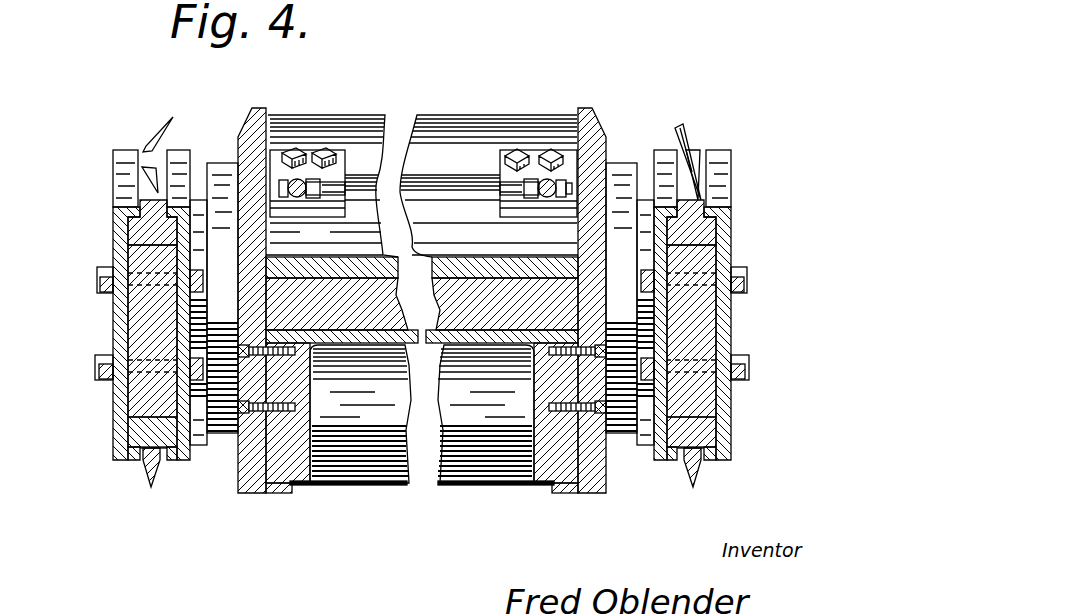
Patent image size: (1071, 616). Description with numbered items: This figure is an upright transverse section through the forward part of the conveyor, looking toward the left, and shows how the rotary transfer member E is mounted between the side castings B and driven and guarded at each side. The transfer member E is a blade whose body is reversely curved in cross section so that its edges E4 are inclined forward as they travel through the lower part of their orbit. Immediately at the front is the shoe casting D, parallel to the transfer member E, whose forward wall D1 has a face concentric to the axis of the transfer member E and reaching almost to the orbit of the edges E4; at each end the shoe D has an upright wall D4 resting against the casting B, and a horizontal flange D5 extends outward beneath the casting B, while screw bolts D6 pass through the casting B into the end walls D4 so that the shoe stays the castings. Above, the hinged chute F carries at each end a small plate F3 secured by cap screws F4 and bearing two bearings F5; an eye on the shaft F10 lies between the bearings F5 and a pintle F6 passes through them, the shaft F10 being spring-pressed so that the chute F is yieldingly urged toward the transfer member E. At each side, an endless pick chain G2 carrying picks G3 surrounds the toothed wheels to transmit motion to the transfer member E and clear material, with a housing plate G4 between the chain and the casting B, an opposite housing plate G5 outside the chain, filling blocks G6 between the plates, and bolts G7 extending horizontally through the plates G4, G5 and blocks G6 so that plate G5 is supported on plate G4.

The side casting B is at (246, 125).
The rotary transfer member E is at (443, 140).
The edges of the transfer member E4 is at (432, 170).
The hinged chute F is at (325, 212).
The plate F3 is at (340, 183).
The cap screws F4 is at (320, 150).
The bearings F5 is at (290, 195).
The pintle F6 is at (362, 178).
The shaft F10 is at (277, 173).
The shoe casting D is at (422, 404).
The forward wall of the shoe D1 is at (357, 410).
The upright end wall of the shoe D4 is at (303, 488).
The horizontal flange D5 is at (259, 493).
The screw bolts D6 is at (228, 320).
The endless pick chain G2 is at (148, 222).
The picks G3 is at (152, 140).
The housing plate G4 is at (190, 437).
The housing plate G5 is at (128, 427).
The filling blocks G6 is at (142, 402).
The bolts G7 is at (97, 278).